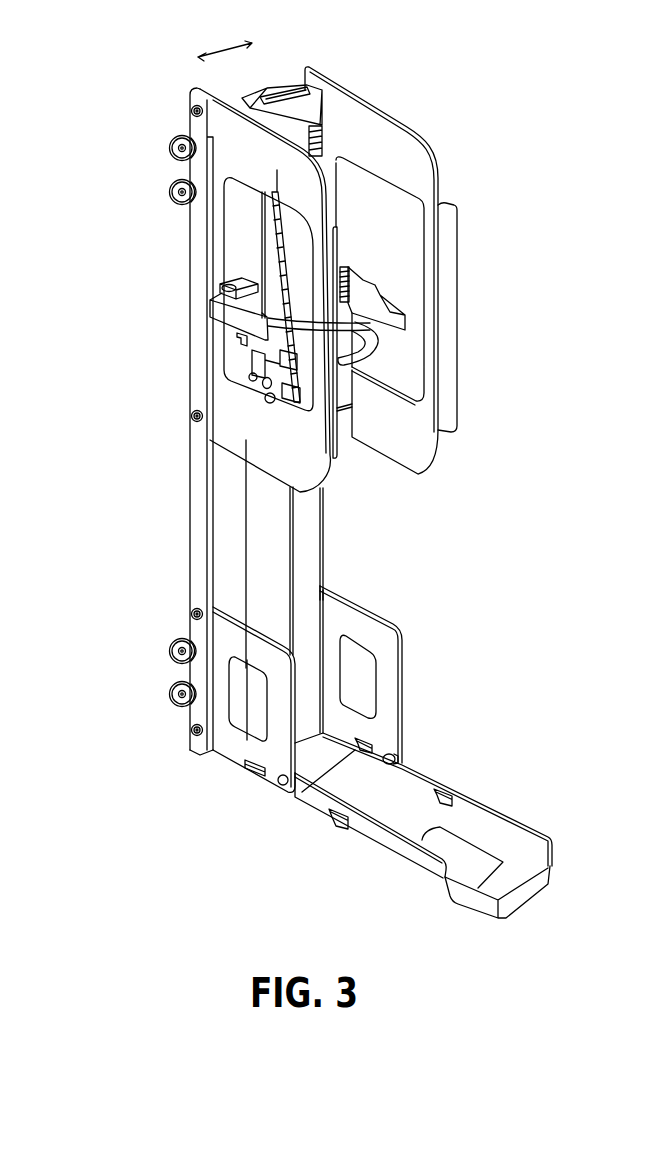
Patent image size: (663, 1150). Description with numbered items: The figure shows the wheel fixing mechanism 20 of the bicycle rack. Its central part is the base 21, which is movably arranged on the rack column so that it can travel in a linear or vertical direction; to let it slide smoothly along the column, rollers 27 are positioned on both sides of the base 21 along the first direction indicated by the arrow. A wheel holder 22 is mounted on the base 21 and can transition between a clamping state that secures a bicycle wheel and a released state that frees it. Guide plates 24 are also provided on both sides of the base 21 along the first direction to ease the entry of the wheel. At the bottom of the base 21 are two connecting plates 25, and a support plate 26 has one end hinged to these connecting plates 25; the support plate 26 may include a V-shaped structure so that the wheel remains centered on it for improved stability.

The wheel fixing mechanism 20 is at (108, 404).
The base 21 is at (222, 535).
The wheel holder 22 is at (225, 315).
The guide plate 24 is at (235, 414).
The connecting plate 25 is at (232, 748).
The support plate 26 is at (373, 828).
The roller 27 is at (171, 152).